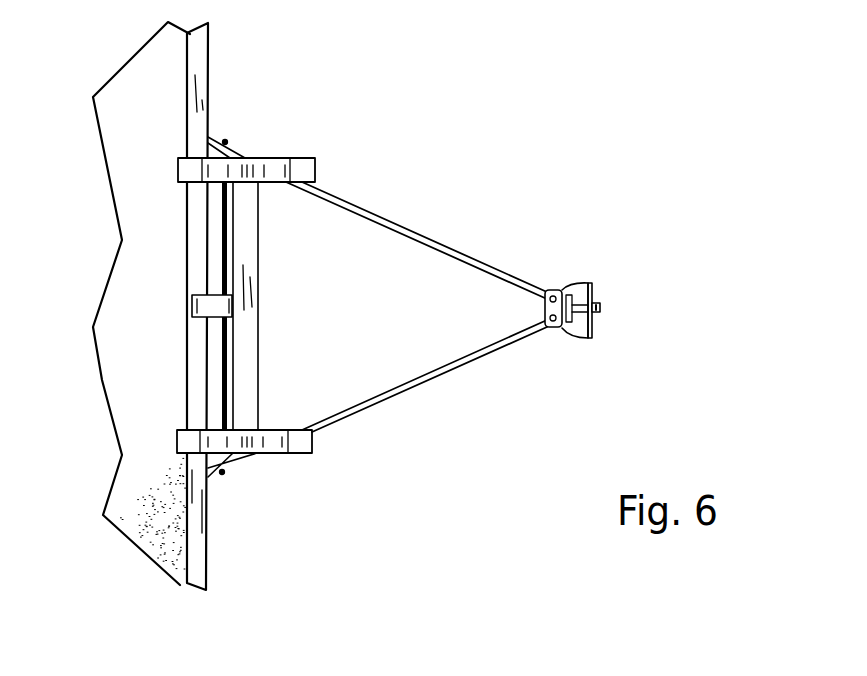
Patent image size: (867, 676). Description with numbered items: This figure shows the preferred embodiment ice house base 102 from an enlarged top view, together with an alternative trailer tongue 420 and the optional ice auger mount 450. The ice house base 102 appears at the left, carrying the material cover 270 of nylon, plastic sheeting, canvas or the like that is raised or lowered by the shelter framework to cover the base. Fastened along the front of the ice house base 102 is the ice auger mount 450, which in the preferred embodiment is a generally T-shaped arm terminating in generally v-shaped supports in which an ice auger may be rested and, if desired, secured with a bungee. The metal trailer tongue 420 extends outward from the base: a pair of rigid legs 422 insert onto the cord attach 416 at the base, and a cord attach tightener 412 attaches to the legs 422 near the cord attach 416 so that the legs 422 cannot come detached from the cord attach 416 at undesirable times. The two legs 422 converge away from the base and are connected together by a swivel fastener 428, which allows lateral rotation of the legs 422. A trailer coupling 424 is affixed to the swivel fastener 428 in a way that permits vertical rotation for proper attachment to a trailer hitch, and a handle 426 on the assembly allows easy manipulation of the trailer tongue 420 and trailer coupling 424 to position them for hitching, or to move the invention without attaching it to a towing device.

The ice fish house base 102 is at (213, 56).
The material cover 270 is at (152, 110).
The cord attach tightener 412 is at (227, 346).
The cord attach 416 is at (209, 127).
The trailer tongue 420 is at (610, 310).
The rigid legs 422 is at (457, 258).
The trailer coupling 424 is at (602, 308).
The handle 426 is at (590, 340).
The swivel fastener 428 is at (557, 289).
The ice auger mount 450 is at (253, 261).